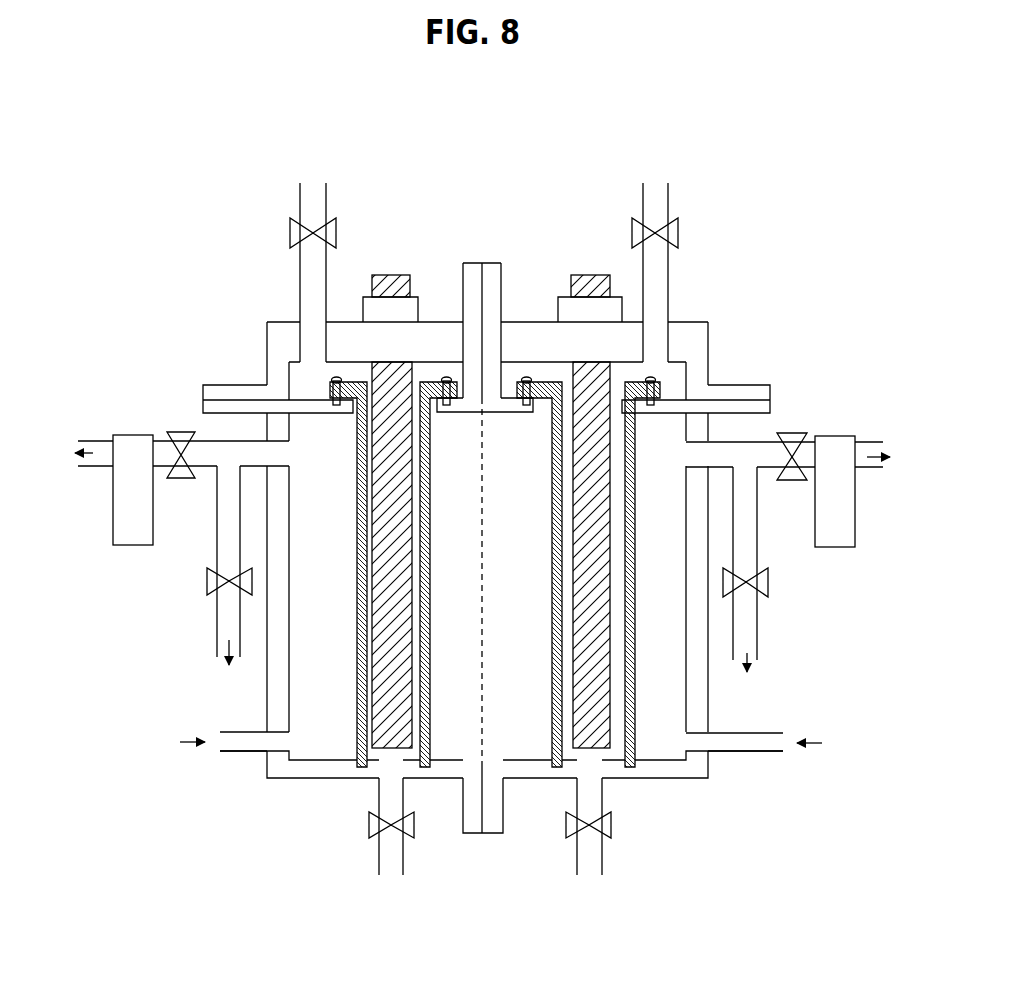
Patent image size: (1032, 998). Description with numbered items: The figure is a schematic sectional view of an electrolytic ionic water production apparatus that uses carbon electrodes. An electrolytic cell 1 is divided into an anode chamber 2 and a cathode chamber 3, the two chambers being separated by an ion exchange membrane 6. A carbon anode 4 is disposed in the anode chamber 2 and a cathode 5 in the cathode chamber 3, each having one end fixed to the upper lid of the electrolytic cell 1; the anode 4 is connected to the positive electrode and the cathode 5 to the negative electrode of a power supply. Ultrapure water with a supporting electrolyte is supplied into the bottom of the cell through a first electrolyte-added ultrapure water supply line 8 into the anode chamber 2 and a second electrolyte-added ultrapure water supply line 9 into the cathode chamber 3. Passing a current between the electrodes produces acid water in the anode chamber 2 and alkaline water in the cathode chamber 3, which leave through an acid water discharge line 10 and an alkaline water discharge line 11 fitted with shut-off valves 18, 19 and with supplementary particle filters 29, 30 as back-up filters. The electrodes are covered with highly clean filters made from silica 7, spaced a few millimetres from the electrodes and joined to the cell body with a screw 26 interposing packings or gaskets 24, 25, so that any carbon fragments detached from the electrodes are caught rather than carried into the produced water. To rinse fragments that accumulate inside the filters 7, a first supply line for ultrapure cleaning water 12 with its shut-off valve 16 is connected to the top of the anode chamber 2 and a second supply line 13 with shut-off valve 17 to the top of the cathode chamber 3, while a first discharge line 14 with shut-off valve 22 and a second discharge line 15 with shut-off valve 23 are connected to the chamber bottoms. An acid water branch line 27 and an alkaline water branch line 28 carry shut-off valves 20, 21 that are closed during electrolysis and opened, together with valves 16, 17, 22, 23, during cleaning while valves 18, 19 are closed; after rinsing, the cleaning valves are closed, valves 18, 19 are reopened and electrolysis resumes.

The electrolytic cell 1 is at (267, 336).
The anode chamber 2 is at (312, 766).
The cathode chamber 3 is at (686, 758).
The carbon anode 4 is at (385, 242).
The cathode 5 is at (557, 262).
The ion exchange membrane 6 is at (482, 596).
The filter 7 is at (552, 643).
The first electrolyte-added ultrapure water supply line 8 is at (252, 747).
The second electrolyte-added ultrapure water supply line 9 is at (770, 752).
The acid water discharge line 10 is at (95, 466).
The alkaline water discharge line 11 is at (882, 467).
The first supply line for ultrapure cleaning water 12 is at (326, 191).
The second supply line for ultrapure cleaning water 13 is at (643, 195).
The first discharge line for ultrapure cleaning water 14 is at (379, 863).
The second discharge line for ultrapure cleaning water 15 is at (577, 863).
The shut-off valve 16 is at (290, 233).
The shut-off valve 17 is at (678, 233).
The shut-off valve 18 is at (183, 478).
The shut-off valve 19 is at (788, 480).
The shut-off valve 20 is at (207, 581).
The shut-off valve 21 is at (768, 582).
The shut-off valve 22 is at (369, 825).
The shut-off valve 23 is at (611, 826).
The packing 24 is at (334, 406).
The packing 25 is at (357, 752).
The screw 26 is at (447, 406).
The acid water branch line 27 is at (217, 633).
The alkaline water branch line 28 is at (757, 639).
The supplementary particle filter 29 is at (133, 435).
The supplementary particle filter 30 is at (830, 436).